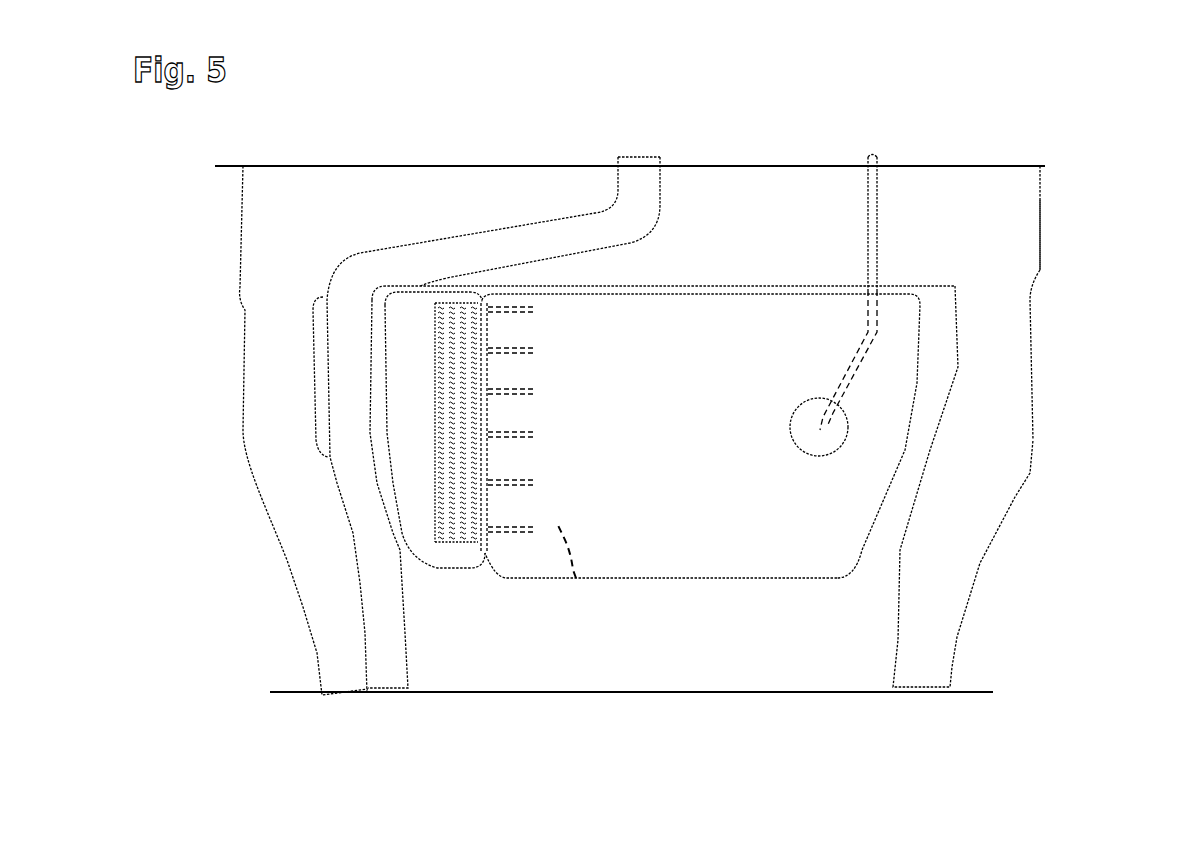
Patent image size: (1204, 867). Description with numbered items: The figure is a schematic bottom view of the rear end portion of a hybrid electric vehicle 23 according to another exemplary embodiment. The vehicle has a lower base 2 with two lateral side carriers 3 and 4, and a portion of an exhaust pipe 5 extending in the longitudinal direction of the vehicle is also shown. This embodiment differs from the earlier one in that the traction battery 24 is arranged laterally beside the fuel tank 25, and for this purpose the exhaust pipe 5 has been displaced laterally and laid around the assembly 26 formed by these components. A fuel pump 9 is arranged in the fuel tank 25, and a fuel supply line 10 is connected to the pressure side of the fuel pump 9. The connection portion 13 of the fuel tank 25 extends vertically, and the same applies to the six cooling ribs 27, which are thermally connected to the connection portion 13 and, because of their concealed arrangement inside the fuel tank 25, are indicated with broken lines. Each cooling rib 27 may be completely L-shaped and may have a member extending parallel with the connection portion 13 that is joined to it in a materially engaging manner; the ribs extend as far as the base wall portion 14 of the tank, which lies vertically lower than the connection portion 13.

The lower base 2 is at (767, 192).
The lateral side carrier 3 is at (317, 537).
The lateral side carrier 4 is at (978, 490).
The exhaust pipe 5 is at (382, 632).
The fuel pump 9 is at (848, 425).
The fuel supply line 10 is at (873, 230).
The connection portion 13 is at (487, 500).
The base wall portion 14 is at (576, 578).
The hybrid electric vehicle 23 is at (1085, 280).
The traction battery 24 is at (410, 378).
The fuel tank 25 is at (723, 596).
The assembly 26 is at (940, 348).
The cooling ribs 27 is at (512, 530).